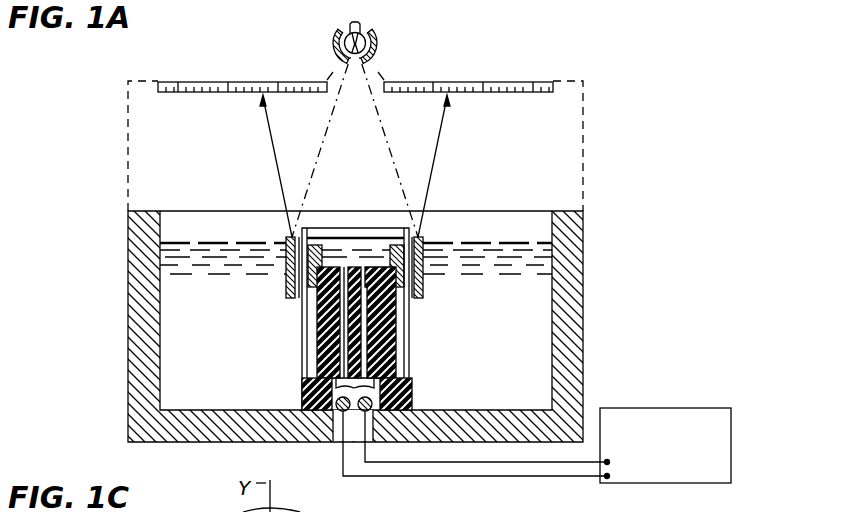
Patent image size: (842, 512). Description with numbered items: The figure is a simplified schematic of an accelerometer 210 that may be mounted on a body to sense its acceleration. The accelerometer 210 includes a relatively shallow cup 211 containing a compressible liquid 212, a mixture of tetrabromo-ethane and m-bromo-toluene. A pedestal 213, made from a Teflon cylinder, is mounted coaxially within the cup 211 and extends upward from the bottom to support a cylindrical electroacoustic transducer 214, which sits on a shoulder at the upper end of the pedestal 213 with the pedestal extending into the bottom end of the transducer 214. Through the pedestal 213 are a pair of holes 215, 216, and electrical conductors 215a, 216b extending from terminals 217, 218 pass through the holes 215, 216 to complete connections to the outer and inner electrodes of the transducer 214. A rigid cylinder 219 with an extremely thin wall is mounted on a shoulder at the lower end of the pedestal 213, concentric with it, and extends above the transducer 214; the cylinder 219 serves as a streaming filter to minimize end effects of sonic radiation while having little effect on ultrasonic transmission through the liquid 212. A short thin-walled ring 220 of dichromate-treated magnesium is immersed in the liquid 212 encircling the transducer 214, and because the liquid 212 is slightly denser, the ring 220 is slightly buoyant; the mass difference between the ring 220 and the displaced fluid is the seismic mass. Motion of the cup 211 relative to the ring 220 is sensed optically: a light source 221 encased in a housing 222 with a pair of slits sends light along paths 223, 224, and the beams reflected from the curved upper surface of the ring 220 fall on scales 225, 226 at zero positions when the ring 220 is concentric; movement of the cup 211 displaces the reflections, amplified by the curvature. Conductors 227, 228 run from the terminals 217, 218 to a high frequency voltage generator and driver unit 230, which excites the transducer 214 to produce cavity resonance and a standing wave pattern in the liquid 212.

The accelerometer 210 is at (207, 153).
The cup 211 is at (128, 235).
The compressible liquid 212 is at (170, 291).
The pedestal 213 is at (385, 356).
The electroacoustic transducer 214 is at (390, 241).
The hole 215 is at (362, 332).
The electrical conductor 215a is at (405, 389).
The hole 216 is at (320, 334).
The electrical conductor 216b is at (306, 390).
The terminal 217 is at (366, 438).
The terminal 218 is at (336, 443).
The rigid cylinder 219 is at (302, 355).
The ring 220 is at (423, 289).
The light source 221 is at (366, 42).
The housing 222 is at (378, 52).
The light path 223 is at (380, 118).
The light path 224 is at (333, 118).
The scale 225 is at (500, 82).
The scale 226 is at (245, 82).
The conductor 227 is at (556, 463).
The conductor 228 is at (378, 477).
The high frequency voltage generator and driver unit 230 is at (660, 484).